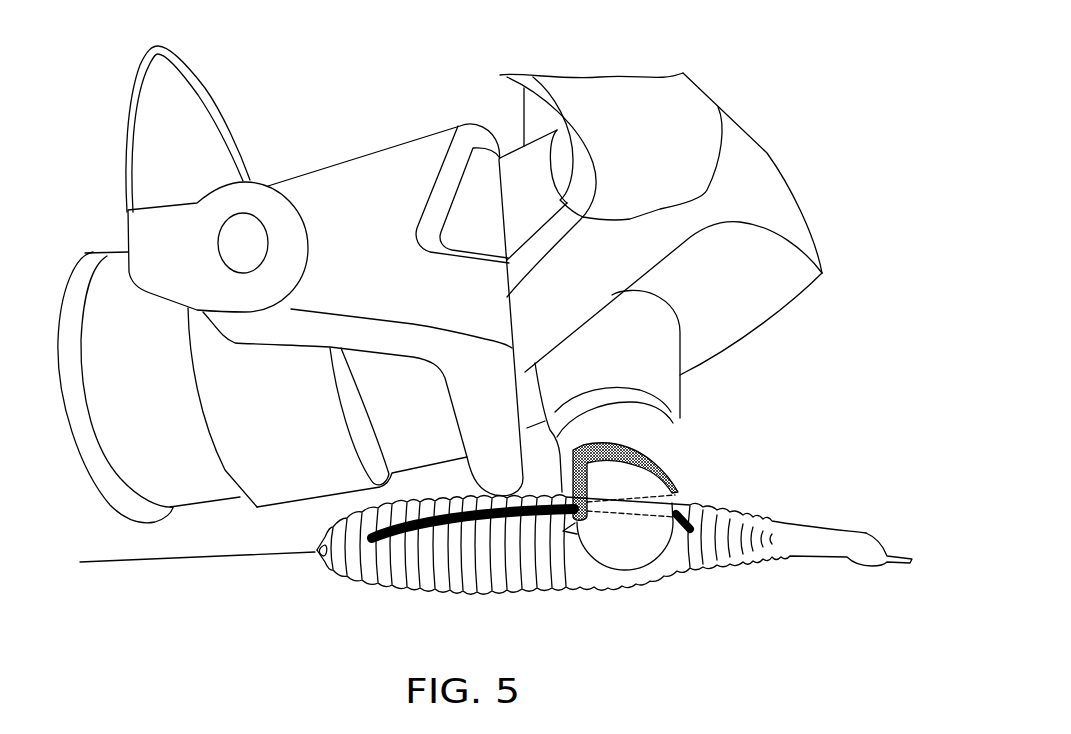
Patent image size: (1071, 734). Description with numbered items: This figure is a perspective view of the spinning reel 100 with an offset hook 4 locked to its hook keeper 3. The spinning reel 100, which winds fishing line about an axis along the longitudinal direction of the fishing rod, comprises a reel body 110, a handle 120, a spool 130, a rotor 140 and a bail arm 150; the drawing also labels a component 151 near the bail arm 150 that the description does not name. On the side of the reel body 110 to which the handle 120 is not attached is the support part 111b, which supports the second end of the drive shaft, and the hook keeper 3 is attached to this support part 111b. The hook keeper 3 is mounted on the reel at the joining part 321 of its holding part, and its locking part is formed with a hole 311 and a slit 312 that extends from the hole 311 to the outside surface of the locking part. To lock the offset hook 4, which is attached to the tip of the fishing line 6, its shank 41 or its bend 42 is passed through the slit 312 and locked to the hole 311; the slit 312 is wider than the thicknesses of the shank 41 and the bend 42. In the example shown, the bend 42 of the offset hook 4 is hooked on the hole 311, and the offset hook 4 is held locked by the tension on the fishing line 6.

The spinning reel 100 is at (781, 72).
The reel body 110 is at (762, 160).
The support part 111b is at (674, 337).
The handle 120 is at (533, 118).
The spool 130 is at (112, 263).
The rotor 140 is at (375, 158).
The bail arm 150 is at (270, 197).
The loop 151 is at (123, 130).
The hook keeper 3 is at (672, 537).
The hole 311 is at (572, 590).
The slit 312 is at (669, 462).
The joining part 321 is at (674, 428).
The offset hook 4 is at (497, 585).
The shank 41 is at (450, 590).
The bend 42 is at (678, 493).
The fishing line 6 is at (207, 560).